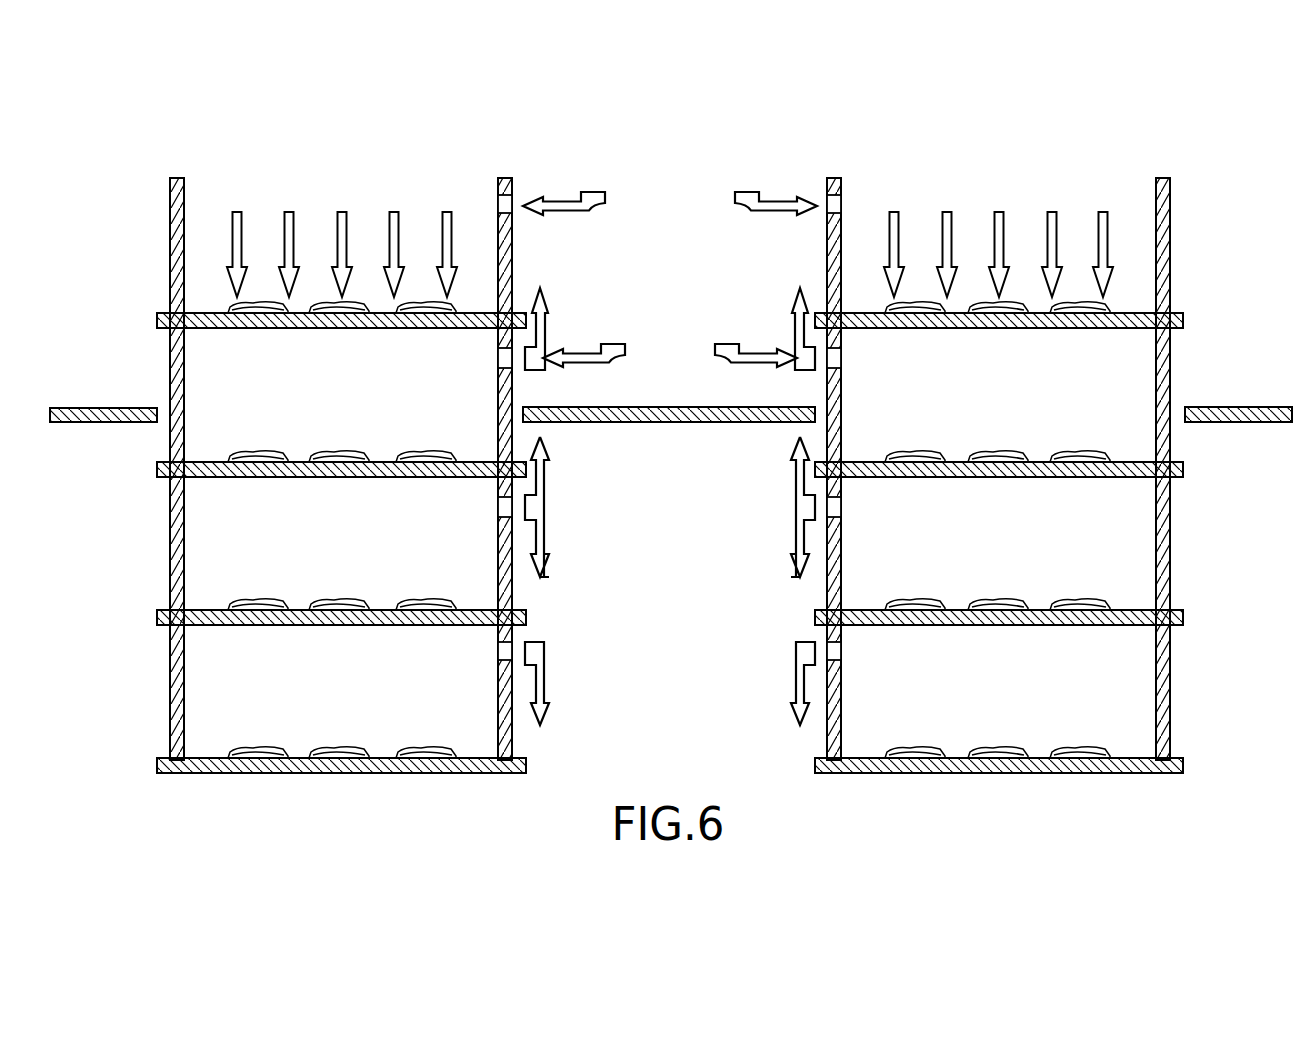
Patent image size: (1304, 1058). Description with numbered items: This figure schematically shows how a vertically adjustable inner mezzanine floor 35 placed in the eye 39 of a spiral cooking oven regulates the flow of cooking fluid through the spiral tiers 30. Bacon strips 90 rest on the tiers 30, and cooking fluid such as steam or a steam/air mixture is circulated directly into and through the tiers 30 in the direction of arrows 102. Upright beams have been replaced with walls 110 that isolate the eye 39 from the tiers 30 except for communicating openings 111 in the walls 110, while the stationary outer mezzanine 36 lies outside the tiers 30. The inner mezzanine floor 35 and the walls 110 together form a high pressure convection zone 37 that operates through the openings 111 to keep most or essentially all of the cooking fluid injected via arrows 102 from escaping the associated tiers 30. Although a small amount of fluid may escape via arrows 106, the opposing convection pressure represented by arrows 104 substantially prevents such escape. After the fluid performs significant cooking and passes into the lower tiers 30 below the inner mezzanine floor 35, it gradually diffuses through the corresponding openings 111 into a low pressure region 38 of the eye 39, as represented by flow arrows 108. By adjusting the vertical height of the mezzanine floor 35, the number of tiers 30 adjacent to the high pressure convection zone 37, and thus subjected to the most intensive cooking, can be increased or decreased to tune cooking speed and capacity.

The spiral tiers 30 is at (990, 330).
The inner mezzanine floor 35 is at (667, 423).
The outer mezzanine 36 is at (1240, 423).
The high pressure convection zone 37 is at (684, 343).
The low pressure region 38 is at (684, 563).
The eye 39 is at (715, 197).
The bacon strips 90 is at (910, 448).
The arrows 102 is at (342, 212).
The arrows 104 is at (597, 194).
The arrows 106 is at (549, 320).
The flow arrows 108 is at (548, 482).
The walls 110 is at (503, 243).
The openings 111 is at (500, 355).